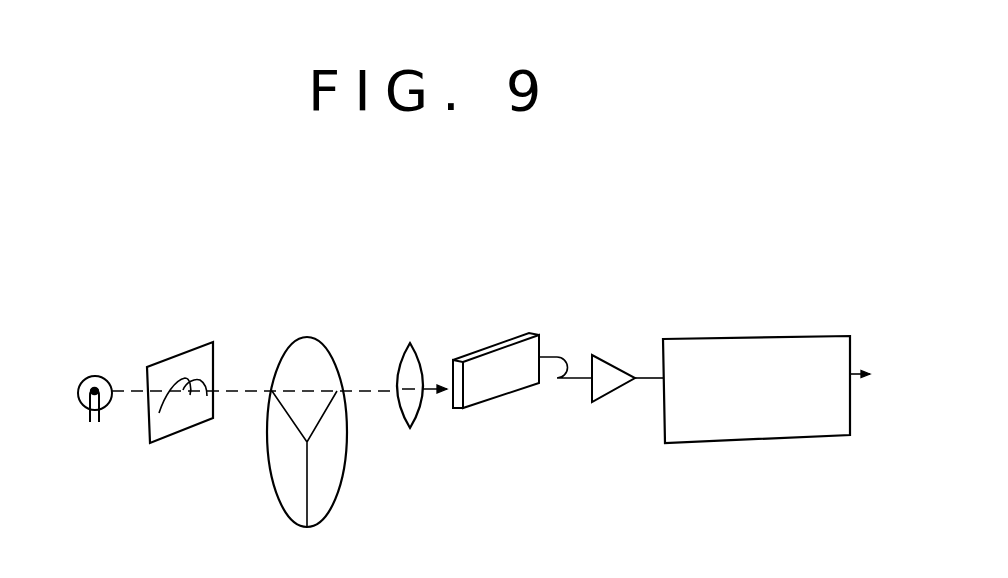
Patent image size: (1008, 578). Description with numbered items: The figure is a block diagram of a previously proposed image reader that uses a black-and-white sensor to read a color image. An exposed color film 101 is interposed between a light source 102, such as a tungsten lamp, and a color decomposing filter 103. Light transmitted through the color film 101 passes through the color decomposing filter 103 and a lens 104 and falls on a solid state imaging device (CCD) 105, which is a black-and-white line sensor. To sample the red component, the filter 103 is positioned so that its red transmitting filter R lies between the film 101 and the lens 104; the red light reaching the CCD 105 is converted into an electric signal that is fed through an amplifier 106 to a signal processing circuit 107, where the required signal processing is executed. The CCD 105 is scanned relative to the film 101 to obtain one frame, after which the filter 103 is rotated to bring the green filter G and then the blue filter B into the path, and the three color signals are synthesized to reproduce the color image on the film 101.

The color film 101 is at (188, 355).
The light source 102 is at (96, 377).
The color decomposing filter 103 is at (322, 362).
The lens 104 is at (412, 356).
The solid state imaging device (CCD) 105 is at (523, 346).
The amplifier 106 is at (612, 368).
The signal processing circuit 107 is at (750, 338).